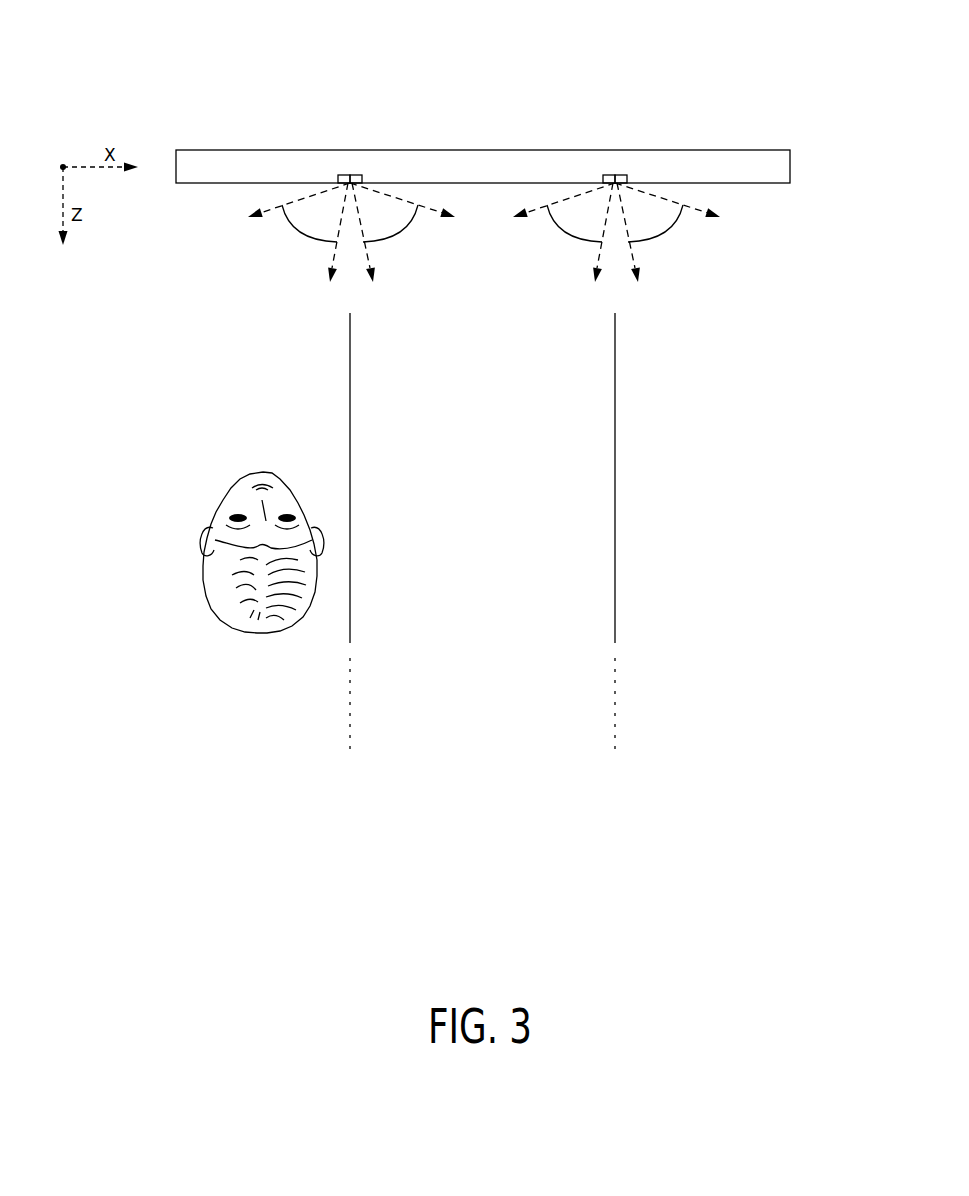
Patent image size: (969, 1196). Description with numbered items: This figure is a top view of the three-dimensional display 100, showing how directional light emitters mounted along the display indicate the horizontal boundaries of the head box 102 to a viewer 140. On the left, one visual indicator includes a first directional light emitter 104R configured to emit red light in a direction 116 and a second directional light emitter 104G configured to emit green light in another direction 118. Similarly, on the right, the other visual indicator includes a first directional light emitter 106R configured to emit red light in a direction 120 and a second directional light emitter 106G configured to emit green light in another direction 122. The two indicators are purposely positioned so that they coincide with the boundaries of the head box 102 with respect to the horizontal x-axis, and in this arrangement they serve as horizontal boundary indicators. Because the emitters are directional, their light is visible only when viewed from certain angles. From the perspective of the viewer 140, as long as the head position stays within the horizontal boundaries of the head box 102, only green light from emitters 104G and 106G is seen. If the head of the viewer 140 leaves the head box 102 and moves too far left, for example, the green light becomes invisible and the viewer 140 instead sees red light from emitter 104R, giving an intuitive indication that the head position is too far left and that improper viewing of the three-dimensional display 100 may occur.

The 3D display 100 is at (774, 66).
The head box 102 is at (482, 534).
The first directional light emitter 104R is at (345, 175).
The second directional light emitter 104G is at (355, 175).
The second directional light emitter 106G is at (610, 175).
The first directional light emitter 106R is at (619, 175).
The direction 116 is at (304, 233).
The direction 118 is at (396, 233).
The direction 120 is at (661, 233).
The direction 122 is at (569, 233).
The viewer 140 is at (259, 633).